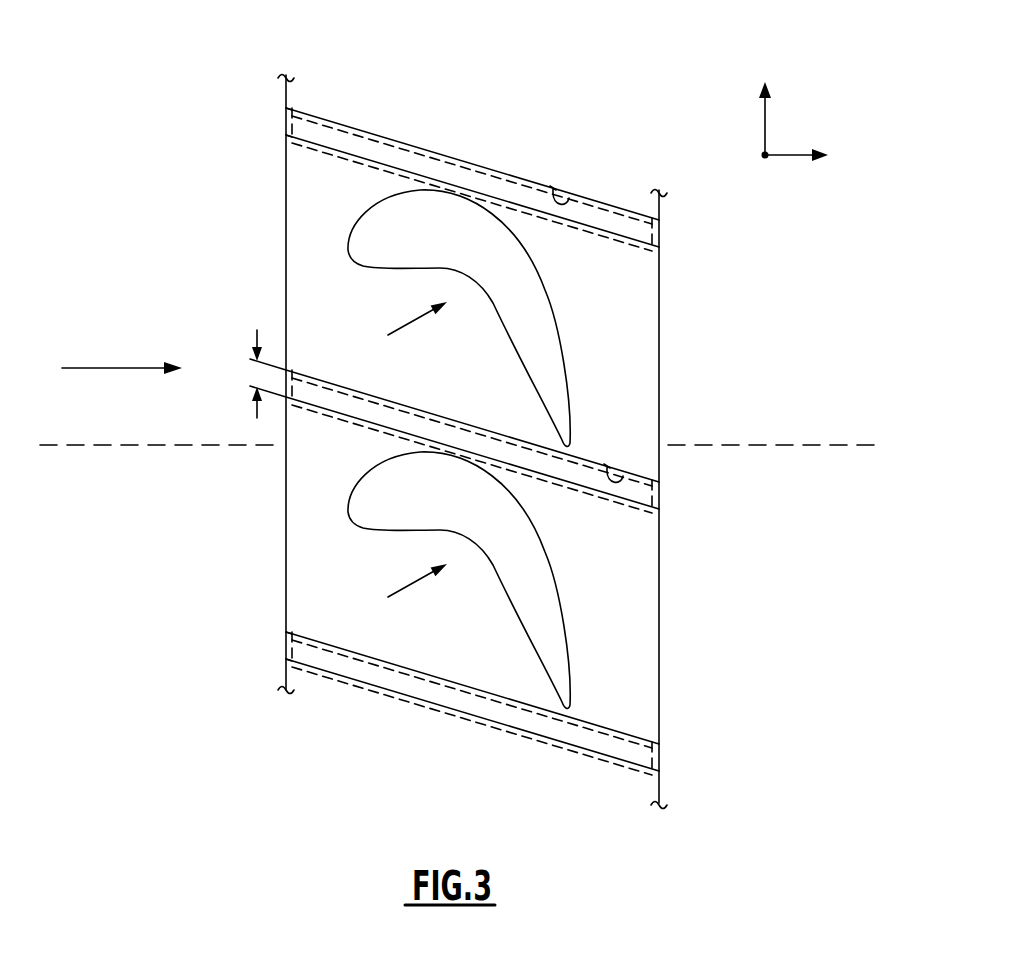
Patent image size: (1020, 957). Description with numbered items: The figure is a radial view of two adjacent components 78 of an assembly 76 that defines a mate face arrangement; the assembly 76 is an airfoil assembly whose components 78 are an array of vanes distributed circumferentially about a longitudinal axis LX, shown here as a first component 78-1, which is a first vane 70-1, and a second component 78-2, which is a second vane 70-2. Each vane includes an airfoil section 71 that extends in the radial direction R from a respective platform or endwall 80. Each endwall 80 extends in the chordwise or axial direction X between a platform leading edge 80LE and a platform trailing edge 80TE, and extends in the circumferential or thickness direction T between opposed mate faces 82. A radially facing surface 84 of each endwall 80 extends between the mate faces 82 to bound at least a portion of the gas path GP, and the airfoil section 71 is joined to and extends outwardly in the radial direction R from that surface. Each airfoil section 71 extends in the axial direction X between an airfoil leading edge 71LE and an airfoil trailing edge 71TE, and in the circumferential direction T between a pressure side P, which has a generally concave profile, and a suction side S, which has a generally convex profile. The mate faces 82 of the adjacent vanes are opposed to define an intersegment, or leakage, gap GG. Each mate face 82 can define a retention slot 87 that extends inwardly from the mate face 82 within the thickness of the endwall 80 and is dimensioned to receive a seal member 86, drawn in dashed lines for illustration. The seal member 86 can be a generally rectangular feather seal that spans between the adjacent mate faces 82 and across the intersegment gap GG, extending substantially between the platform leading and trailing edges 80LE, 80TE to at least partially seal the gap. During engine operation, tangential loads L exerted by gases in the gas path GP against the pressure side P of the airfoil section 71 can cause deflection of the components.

The assembly 76 is at (142, 60).
The components 78 is at (286, 108).
The first vane 70-1 is at (191, 153).
The first component 78-1 is at (286, 170).
The second vane 70-2 is at (207, 642).
The second component 78-2 is at (285, 613).
The endwall 80 is at (296, 196).
The platform leading edge 80LE is at (286, 262).
The platform trailing edge 80TE is at (662, 356).
The radially facing surface 84 is at (300, 296).
The mate faces 82 is at (414, 436).
The seal member 86 is at (500, 163).
The retention slot 87 is at (570, 200).
The airfoil section 71 is at (383, 232).
The airfoil leading edge 71LE is at (348, 262).
The airfoil trailing edge 71TE is at (576, 438).
The suction side S is at (547, 302).
The pressure side P is at (503, 322).
The loads L is at (403, 327).
The gas path GP is at (108, 366).
The intersegment gap GG is at (256, 412).
The longitudinal axis LX is at (788, 445).
The circumferential direction T is at (764, 102).
The axial direction X is at (806, 154).
The radial direction R is at (765, 157).